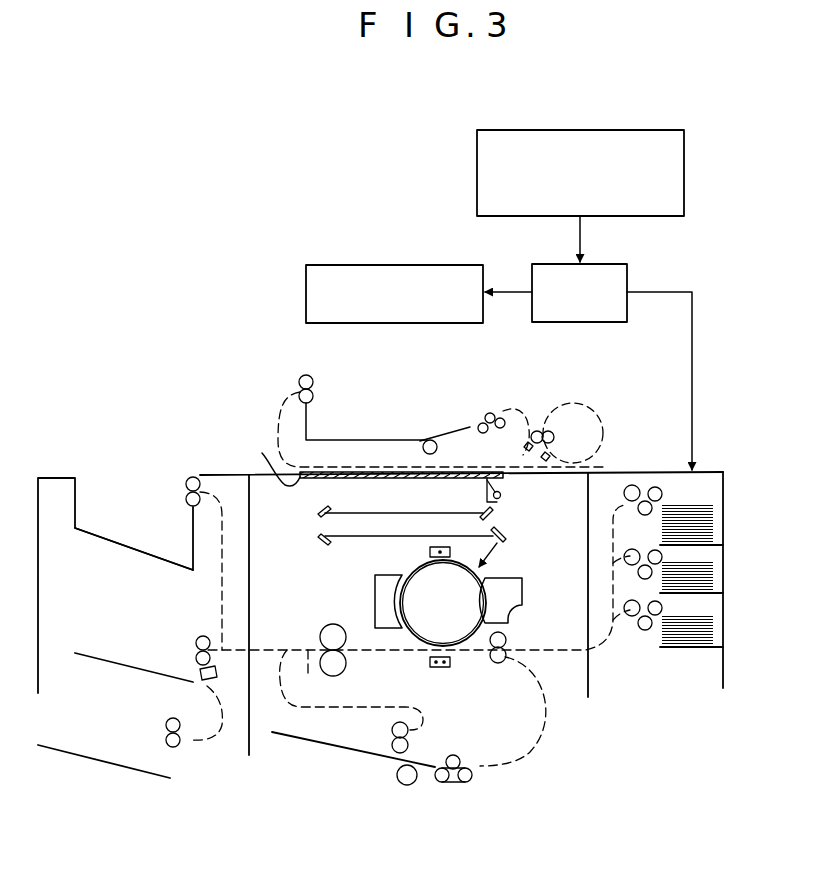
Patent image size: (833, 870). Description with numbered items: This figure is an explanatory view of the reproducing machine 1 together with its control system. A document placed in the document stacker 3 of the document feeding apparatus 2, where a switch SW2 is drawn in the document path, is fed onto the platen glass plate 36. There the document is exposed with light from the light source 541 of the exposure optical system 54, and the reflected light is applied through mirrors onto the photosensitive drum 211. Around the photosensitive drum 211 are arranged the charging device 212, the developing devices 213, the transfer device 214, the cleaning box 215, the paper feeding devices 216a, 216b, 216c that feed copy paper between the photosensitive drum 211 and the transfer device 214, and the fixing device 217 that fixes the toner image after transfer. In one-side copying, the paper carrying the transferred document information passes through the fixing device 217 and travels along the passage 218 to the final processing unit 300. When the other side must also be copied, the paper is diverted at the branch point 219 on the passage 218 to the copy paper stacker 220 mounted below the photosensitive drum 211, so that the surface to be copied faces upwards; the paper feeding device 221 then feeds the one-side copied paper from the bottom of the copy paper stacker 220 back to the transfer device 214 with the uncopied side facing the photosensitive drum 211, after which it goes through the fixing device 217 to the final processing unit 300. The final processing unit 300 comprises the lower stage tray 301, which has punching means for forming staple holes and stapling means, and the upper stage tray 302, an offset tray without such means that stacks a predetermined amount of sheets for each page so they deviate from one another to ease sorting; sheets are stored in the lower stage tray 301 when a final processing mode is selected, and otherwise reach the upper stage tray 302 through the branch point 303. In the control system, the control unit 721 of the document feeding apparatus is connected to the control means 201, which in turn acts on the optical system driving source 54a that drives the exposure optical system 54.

The control unit of document feeding apparatus 721 is at (478, 173).
The control means 201 is at (628, 280).
The optical system driving source 54a is at (306, 292).
The reproducing machine 1 is at (231, 471).
The platen glass plate 36 is at (272, 457).
The document stacker 3 is at (338, 439).
The document feeding apparatus 2 is at (407, 433).
The switch SW2 is at (525, 437).
The exposure optical system 54 is at (316, 526).
The light source 541 is at (504, 495).
The photosensitive drum 211 is at (483, 571).
The charging device 212 is at (430, 552).
The developing devices 213 is at (522, 598).
The transfer device 214 is at (437, 669).
The cleaning box 215 is at (378, 597).
The paper feeding device 216a is at (643, 485).
The paper feeding device 216b is at (640, 550).
The paper feeding device 216c is at (648, 630).
The fixing device 217 is at (331, 625).
The passage 218 is at (316, 675).
The branch point 219 is at (287, 647).
The copy paper stacker 220 is at (315, 739).
The paper feeding device 221 is at (453, 755).
The final processing unit 300 is at (36, 492).
The lower stage tray 301 is at (112, 660).
The upper stage tray 302 is at (122, 543).
The branch point 303 is at (230, 648).